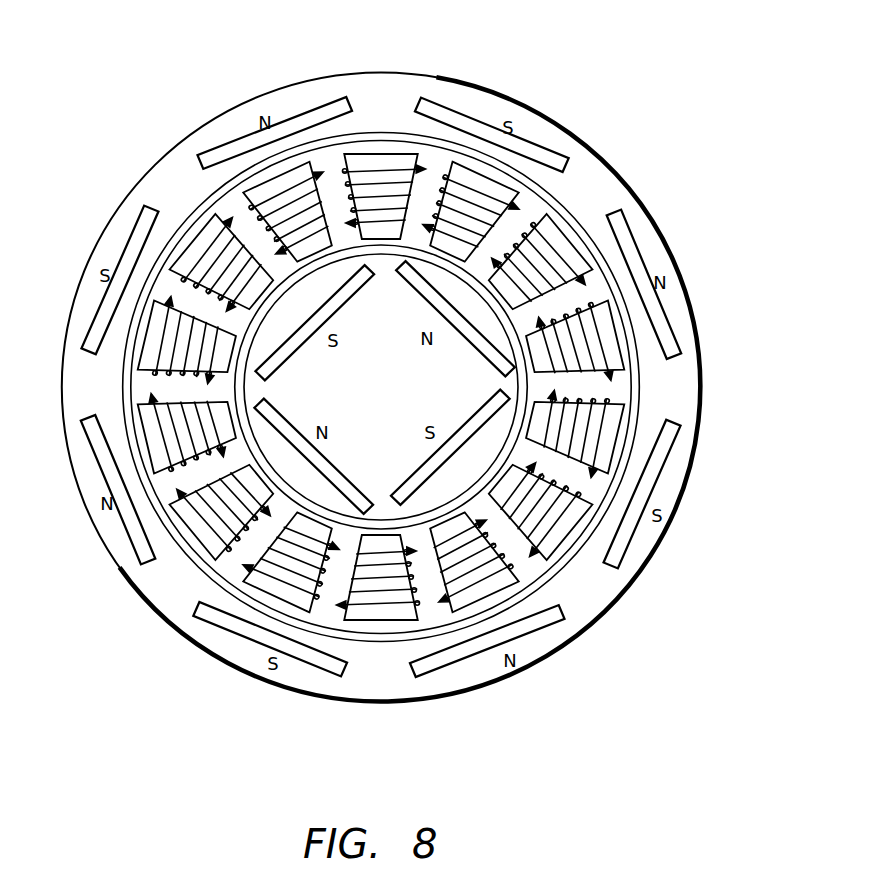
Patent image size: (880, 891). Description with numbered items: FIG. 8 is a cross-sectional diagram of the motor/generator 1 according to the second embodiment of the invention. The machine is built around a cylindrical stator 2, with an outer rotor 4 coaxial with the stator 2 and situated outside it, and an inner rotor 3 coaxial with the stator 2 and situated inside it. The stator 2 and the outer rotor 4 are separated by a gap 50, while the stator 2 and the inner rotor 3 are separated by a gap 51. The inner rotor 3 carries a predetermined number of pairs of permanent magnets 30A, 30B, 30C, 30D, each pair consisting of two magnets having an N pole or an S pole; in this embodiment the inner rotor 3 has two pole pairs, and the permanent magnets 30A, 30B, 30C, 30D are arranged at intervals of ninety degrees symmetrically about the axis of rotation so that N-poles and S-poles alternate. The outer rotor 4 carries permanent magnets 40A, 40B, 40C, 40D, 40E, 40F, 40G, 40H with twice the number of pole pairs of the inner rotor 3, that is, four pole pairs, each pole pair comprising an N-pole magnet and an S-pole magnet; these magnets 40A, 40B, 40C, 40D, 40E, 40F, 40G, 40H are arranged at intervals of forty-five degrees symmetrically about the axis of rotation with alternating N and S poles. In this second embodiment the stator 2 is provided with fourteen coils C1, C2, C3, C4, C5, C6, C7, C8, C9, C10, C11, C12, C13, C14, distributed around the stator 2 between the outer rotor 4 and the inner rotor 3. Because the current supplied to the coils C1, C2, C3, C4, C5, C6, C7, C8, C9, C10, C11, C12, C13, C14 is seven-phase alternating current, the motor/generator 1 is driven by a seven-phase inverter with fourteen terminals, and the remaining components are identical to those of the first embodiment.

The motor/generator 1 is at (424, 66).
The stator 2 is at (590, 272).
The inner rotor 3 is at (493, 448).
The outer rotor 4 is at (697, 306).
The gap 50 is at (558, 212).
The gap 51 is at (468, 280).
The permanent magnet 30A is at (462, 332).
The permanent magnet 30B is at (463, 417).
The permanent magnet 30C is at (340, 468).
The permanent magnet 30D is at (308, 345).
The permanent magnet 40A is at (455, 122).
The permanent magnet 40B is at (630, 252).
The permanent magnet 40C is at (622, 547).
The permanent magnet 40D is at (551, 630).
The permanent magnet 40E is at (327, 667).
The permanent magnet 40F is at (140, 545).
The permanent magnet 40G is at (95, 330).
The permanent magnet 40H is at (242, 145).
The coil C1 is at (582, 328).
The coil C2 is at (547, 247).
The coil C3 is at (490, 190).
The coil C4 is at (363, 172).
The coil C5 is at (268, 197).
The coil C6 is at (250, 292).
The coil C7 is at (215, 348).
The coil C8 is at (230, 397).
The coil C9 is at (247, 487).
The coil C10 is at (307, 537).
The coil C11 is at (383, 540).
The coil C12 is at (437, 530).
The coil C13 is at (547, 530).
The coil C14 is at (600, 413).